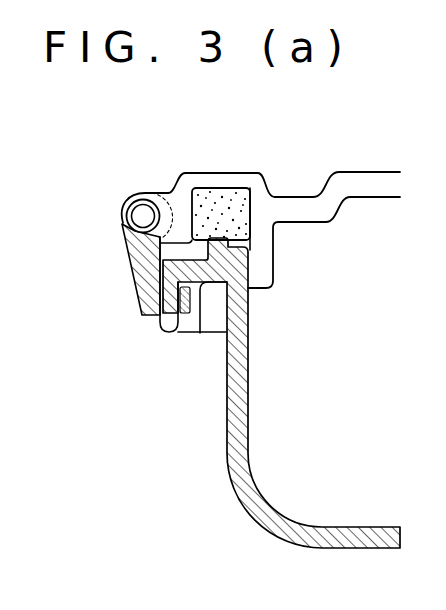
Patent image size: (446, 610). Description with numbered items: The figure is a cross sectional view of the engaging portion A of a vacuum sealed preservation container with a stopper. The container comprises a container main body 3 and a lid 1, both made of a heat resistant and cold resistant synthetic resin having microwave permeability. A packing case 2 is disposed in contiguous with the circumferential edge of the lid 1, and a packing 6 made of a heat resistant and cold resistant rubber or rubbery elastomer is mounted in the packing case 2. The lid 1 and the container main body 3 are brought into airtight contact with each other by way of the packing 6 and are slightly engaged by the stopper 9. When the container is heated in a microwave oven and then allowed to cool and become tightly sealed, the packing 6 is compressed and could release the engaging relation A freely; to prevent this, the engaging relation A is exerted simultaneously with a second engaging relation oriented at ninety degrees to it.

The lid 1 is at (355, 172).
The packing case 2 is at (190, 173).
The container main body 3 is at (250, 415).
The packing 6 is at (222, 208).
The stopper 9 is at (138, 304).
The engaging relation A is at (207, 333).